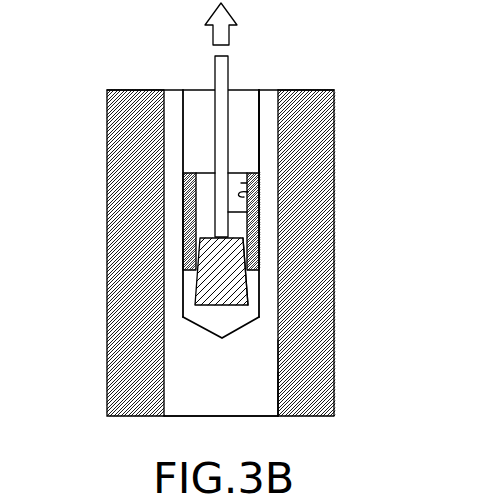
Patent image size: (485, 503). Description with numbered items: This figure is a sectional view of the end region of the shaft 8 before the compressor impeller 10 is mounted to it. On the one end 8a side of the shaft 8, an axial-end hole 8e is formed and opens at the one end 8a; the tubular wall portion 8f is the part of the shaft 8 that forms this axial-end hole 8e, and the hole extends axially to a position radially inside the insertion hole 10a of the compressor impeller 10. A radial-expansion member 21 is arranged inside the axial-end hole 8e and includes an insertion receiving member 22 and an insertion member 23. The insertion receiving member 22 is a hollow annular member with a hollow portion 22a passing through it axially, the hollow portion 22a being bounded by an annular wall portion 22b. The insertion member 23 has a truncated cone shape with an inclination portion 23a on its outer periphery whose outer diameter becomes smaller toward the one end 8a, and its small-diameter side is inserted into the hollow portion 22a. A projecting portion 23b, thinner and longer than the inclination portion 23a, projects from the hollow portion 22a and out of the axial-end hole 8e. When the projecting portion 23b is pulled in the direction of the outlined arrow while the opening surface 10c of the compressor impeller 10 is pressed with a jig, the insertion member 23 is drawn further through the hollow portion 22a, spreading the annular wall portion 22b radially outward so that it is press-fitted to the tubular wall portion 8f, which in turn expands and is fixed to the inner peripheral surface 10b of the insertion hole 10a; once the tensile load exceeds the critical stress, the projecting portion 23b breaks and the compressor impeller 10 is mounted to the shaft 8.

The shaft 8 is at (203, 363).
The one end 8a is at (265, 90).
The axial-end hole 8e is at (256, 133).
The tubular wall portion 8f is at (170, 120).
The compressor impeller 10 is at (107, 233).
The insertion hole 10a is at (278, 374).
The inner peripheral surface 10b is at (278, 374).
The opening surface 10c is at (320, 90).
The radial-expansion member 21 is at (195, 157).
The insertion receiving member 22 is at (256, 166).
The hollow portion 22a is at (241, 183).
The annular wall portion 22b is at (248, 192).
The insertion member 23 is at (222, 304).
The inclination portion 23a is at (258, 284).
The projecting portion 23b is at (228, 212).